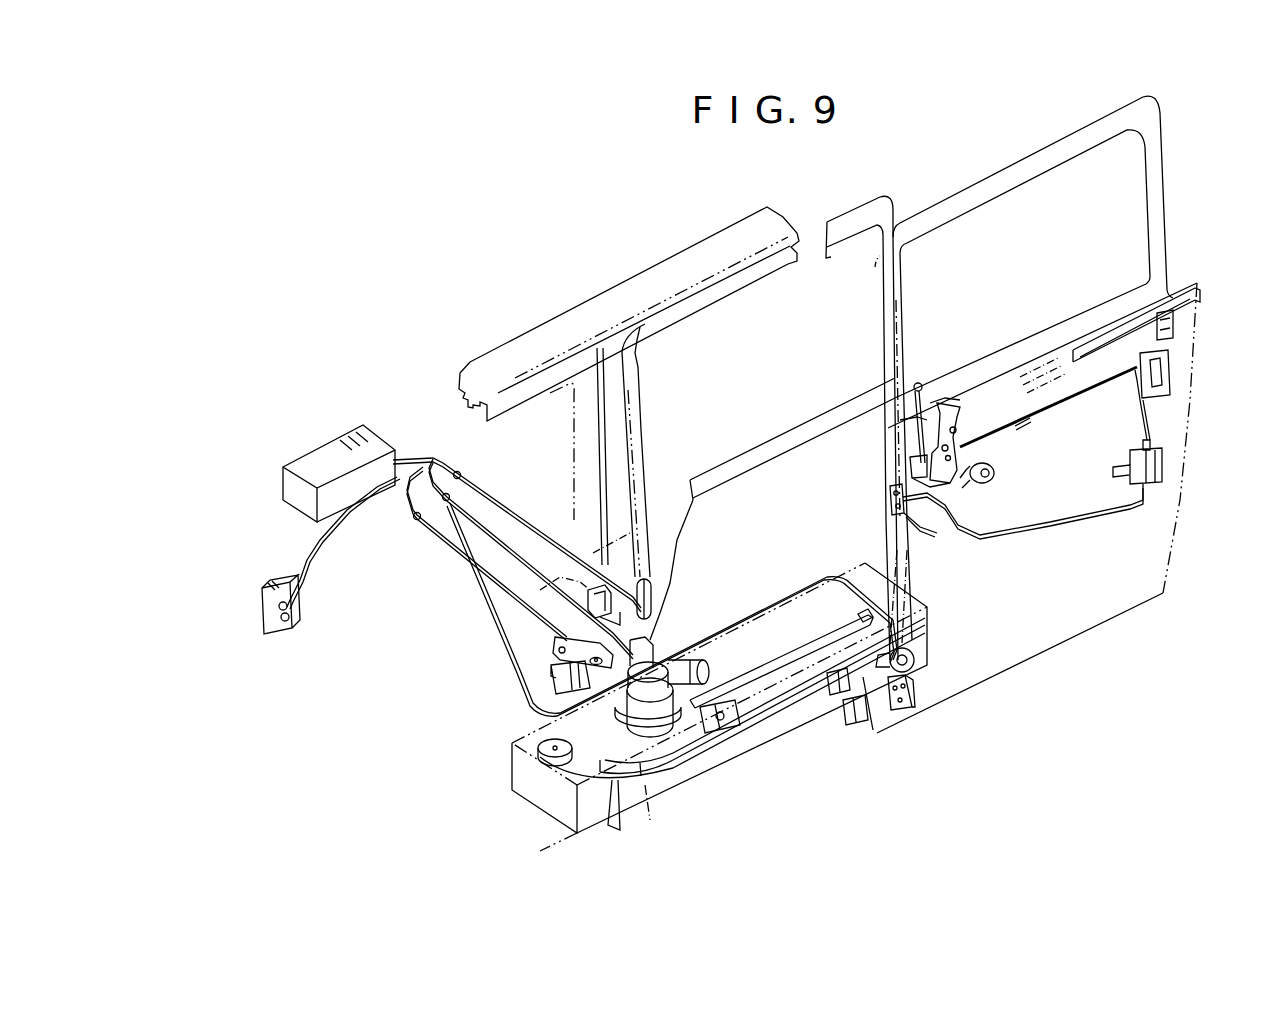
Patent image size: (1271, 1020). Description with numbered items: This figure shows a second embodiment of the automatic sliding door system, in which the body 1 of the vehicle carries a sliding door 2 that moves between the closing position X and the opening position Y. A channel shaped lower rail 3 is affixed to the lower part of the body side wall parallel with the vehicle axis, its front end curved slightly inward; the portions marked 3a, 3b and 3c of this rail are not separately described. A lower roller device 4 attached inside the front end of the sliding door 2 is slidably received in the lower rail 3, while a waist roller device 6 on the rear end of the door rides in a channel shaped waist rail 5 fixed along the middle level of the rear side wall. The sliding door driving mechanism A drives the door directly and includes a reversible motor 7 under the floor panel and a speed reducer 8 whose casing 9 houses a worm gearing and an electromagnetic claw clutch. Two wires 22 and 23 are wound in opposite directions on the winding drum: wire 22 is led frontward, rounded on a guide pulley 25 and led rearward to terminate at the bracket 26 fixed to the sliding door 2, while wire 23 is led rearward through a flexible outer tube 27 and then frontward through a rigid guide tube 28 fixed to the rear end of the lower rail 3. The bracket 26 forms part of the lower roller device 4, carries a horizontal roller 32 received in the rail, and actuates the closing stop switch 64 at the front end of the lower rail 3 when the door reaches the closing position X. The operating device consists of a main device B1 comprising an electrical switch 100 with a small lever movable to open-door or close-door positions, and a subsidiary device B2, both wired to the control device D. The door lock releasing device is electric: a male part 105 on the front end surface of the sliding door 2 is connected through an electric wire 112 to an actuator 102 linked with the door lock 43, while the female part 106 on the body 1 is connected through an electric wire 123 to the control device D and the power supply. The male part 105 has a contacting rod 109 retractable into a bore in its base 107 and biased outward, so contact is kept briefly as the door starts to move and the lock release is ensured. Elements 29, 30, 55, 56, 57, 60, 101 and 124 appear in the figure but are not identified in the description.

The body 1 is at (555, 396).
The sliding door 2 is at (950, 192).
The lower rail 3 is at (708, 769).
The straight rail portion 3a is at (763, 755).
The rail end portion 3b is at (532, 802).
The curved rail portion 3c is at (643, 805).
The lower roller device 4 is at (899, 712).
The waist rail 5 is at (1192, 293).
The waist roller device 6 is at (1173, 335).
The reversible motor 7 is at (686, 652).
The speed reducer 8 is at (655, 660).
The casing 9 is at (627, 716).
The wire 22 is at (560, 727).
The wire 23 is at (863, 628).
The guide pulley 25 is at (527, 743).
The bracket 26 is at (913, 703).
The flexible outer tube 27 is at (786, 652).
The rigid guide tube 28 is at (913, 627).
The cable clamp 29 is at (857, 723).
The curved guide 30 is at (660, 787).
The horizontal roller 32 is at (823, 679).
The door lock 43 is at (1174, 376).
The rod 55 is at (1053, 400).
The cable end 56 is at (983, 441).
The door lock 57 is at (943, 396).
The latch 60 is at (910, 664).
The closing stop switch 64 is at (553, 683).
The electrical switch 100 is at (268, 623).
The bracket 101 is at (548, 655).
The actuator 102 is at (1158, 465).
The male part 105 is at (887, 497).
The female part 106 is at (658, 580).
The base 107 is at (925, 526).
The contacting rod 109 is at (892, 500).
The electric wire 112 is at (1050, 526).
The electric wire 123 is at (520, 516).
The wire harness 124 is at (443, 510).
The sliding door driving mechanism A is at (778, 606).
The main device B1 is at (290, 632).
The subsidiary device B2 is at (587, 580).
The control device D is at (314, 450).
The closing position X is at (692, 291).
The opening position Y is at (912, 213).